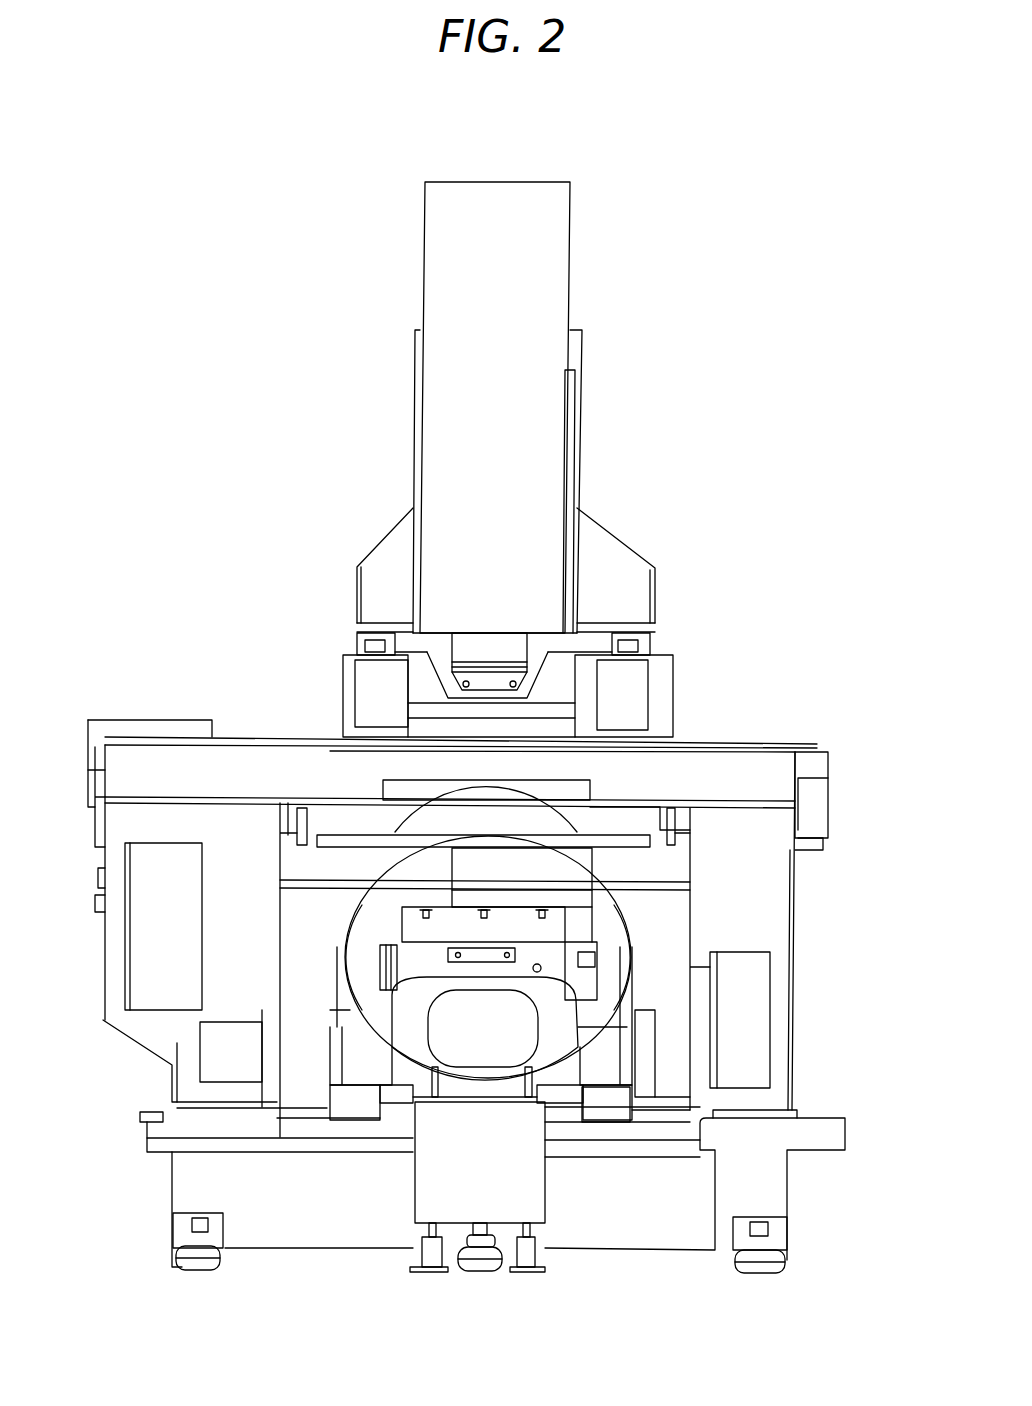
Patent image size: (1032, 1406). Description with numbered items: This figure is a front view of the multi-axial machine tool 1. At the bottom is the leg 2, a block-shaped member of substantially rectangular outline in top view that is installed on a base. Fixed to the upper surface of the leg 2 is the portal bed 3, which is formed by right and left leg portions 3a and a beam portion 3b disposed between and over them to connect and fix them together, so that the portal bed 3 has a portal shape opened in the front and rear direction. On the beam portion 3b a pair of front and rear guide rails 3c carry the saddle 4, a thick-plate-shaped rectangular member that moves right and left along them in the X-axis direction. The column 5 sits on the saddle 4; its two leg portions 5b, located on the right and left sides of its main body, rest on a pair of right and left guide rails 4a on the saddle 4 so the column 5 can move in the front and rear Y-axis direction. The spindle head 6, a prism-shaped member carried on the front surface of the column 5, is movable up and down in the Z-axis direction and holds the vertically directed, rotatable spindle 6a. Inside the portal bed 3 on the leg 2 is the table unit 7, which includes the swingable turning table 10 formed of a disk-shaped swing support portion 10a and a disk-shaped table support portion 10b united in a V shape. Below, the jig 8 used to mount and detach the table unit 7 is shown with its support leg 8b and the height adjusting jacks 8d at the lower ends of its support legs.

The multi-axial machine tool 1 is at (258, 486).
The leg 2 is at (790, 1190).
The portal bed 3 is at (452, 927).
The leg portion 3a is at (113, 951).
The beam portion 3b is at (791, 740).
The guide rail 3c is at (733, 742).
The saddle 4 is at (677, 694).
The guide rail 4a is at (357, 642).
The column 5 is at (503, 570).
The leg portion 5b is at (355, 583).
The spindle head 6 is at (572, 315).
The spindle 6a is at (452, 656).
The table unit 7 is at (632, 925).
The jig 8 is at (463, 1213).
The support leg 8b is at (540, 1203).
The height adjusting jack 8d is at (478, 1274).
The turning table 10 is at (460, 958).
The swing support portion 10a is at (381, 872).
The table support portion 10b is at (410, 1023).